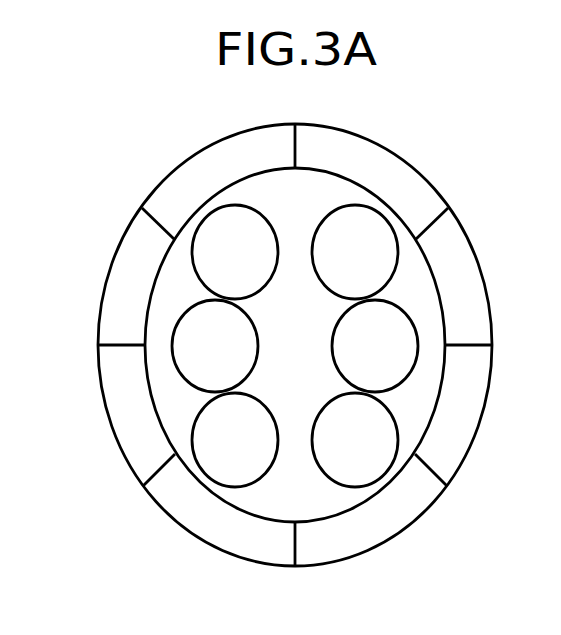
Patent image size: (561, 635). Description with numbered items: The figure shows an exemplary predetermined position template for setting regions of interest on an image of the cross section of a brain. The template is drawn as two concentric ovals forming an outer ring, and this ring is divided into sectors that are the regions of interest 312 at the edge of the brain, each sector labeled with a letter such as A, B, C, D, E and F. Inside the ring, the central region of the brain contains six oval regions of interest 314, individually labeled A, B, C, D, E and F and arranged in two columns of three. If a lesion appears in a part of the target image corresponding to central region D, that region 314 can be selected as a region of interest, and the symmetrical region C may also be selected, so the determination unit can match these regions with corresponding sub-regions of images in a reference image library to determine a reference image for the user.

The region of interest at the edge of the brain 312 is at (170, 172).
The region of interest at the central region of the brain 314 is at (159, 242).
The region A is at (235, 252).
The region B is at (355, 252).
The region C is at (215, 346).
The region D is at (375, 346).
The region E is at (235, 440).
The region F is at (355, 440).